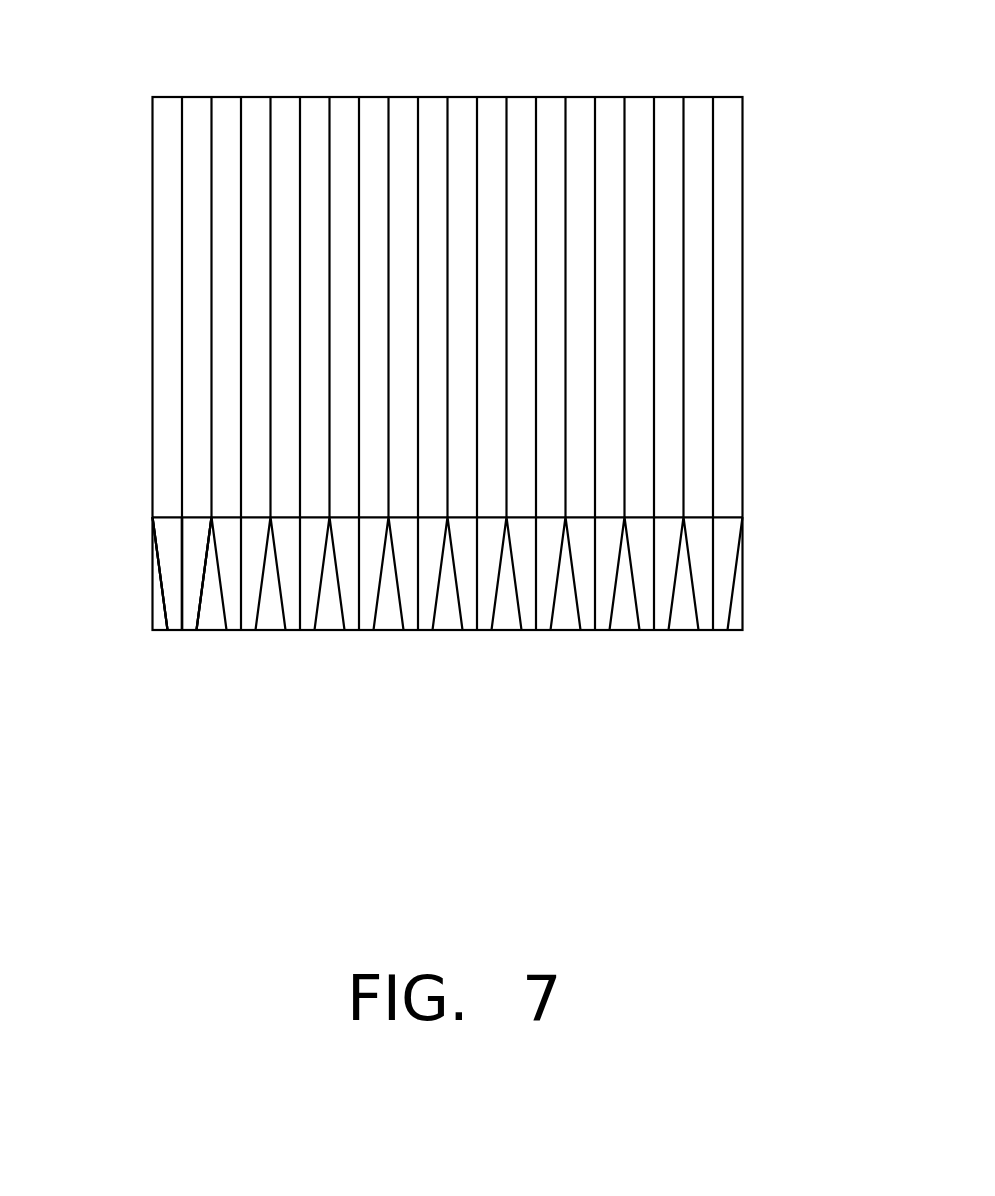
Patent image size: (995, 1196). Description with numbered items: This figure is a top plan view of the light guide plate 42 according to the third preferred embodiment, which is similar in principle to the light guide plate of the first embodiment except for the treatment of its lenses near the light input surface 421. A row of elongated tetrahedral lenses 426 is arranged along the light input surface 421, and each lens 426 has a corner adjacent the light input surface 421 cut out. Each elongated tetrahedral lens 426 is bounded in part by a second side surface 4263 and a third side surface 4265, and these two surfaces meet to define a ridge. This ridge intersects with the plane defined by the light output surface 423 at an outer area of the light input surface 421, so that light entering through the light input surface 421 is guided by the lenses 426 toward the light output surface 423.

The light guide plate 42 is at (426, 58).
The light input surface 421 is at (623, 630).
The light output surface 423 is at (682, 606).
The elongated tetrahedral lens 426 is at (280, 690).
The second side surface 4263 is at (170, 586).
The third side surface 4265 is at (193, 592).